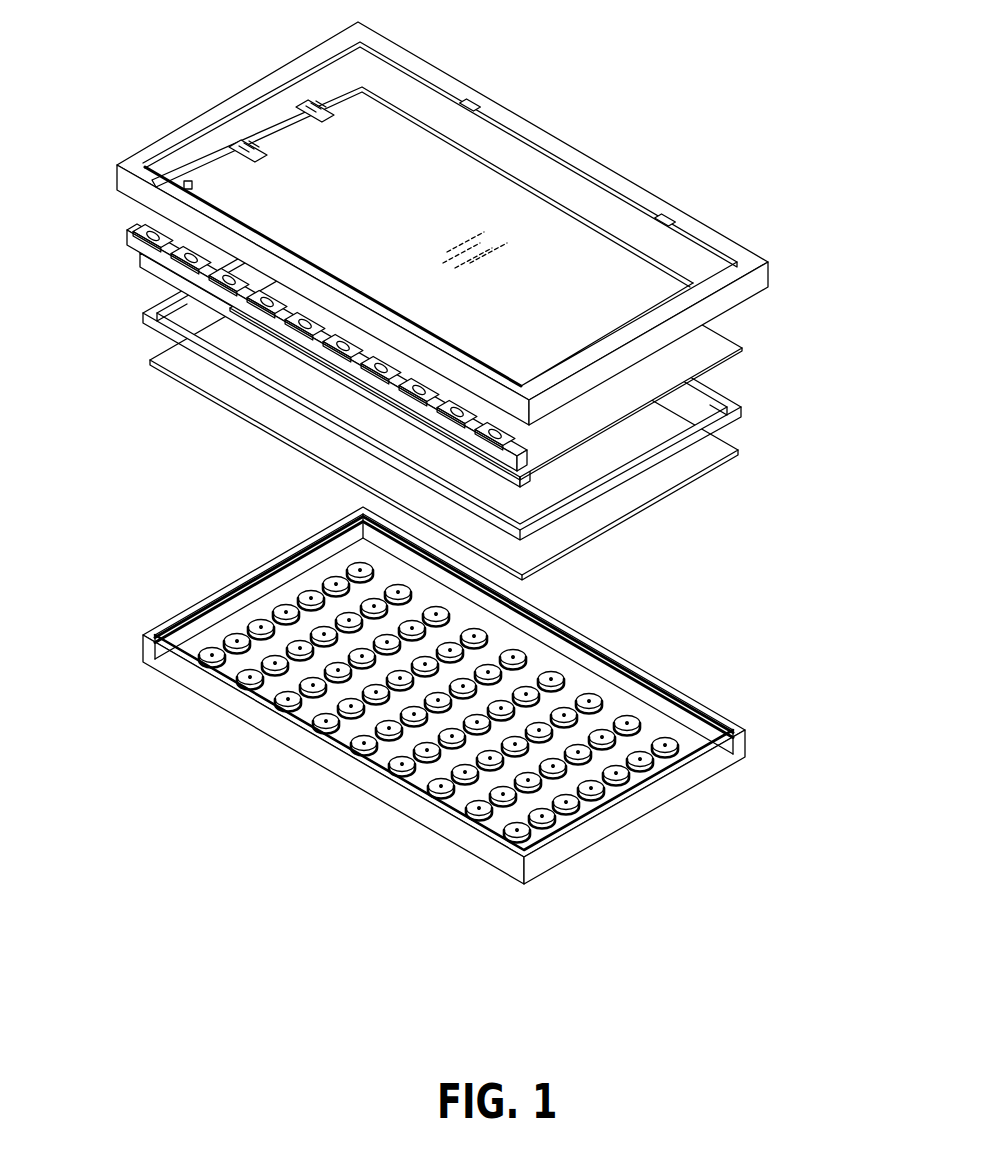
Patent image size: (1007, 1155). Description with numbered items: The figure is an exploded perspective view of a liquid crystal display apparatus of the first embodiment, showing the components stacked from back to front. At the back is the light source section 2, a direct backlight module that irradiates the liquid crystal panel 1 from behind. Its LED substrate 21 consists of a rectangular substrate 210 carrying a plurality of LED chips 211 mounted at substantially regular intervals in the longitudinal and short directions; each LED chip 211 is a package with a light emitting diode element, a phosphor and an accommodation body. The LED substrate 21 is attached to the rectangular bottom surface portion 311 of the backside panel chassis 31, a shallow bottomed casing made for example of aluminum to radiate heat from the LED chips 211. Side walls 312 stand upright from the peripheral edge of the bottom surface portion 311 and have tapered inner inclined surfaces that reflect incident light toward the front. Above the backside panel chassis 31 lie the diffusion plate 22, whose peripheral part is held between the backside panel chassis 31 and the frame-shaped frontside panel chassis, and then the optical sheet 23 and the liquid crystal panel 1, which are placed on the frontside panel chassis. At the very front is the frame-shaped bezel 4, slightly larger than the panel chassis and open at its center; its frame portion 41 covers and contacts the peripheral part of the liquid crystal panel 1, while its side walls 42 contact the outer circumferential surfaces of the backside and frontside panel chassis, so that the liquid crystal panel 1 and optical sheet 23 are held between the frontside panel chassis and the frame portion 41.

The liquid crystal panel 1 is at (480, 188).
The light source section 2 is at (466, 587).
The bezel 4 is at (443, 220).
The frame portion 41 is at (730, 247).
The side walls 42 is at (236, 96).
The LED substrate 21 is at (438, 741).
The substrate 210 is at (380, 757).
The LED chips 211 is at (437, 798).
The diffusion plate 22 is at (675, 492).
The optical sheet 23 is at (752, 353).
The backside panel chassis 31 is at (456, 695).
The bottom surface portion 311 is at (247, 736).
The side walls 312 is at (222, 590).